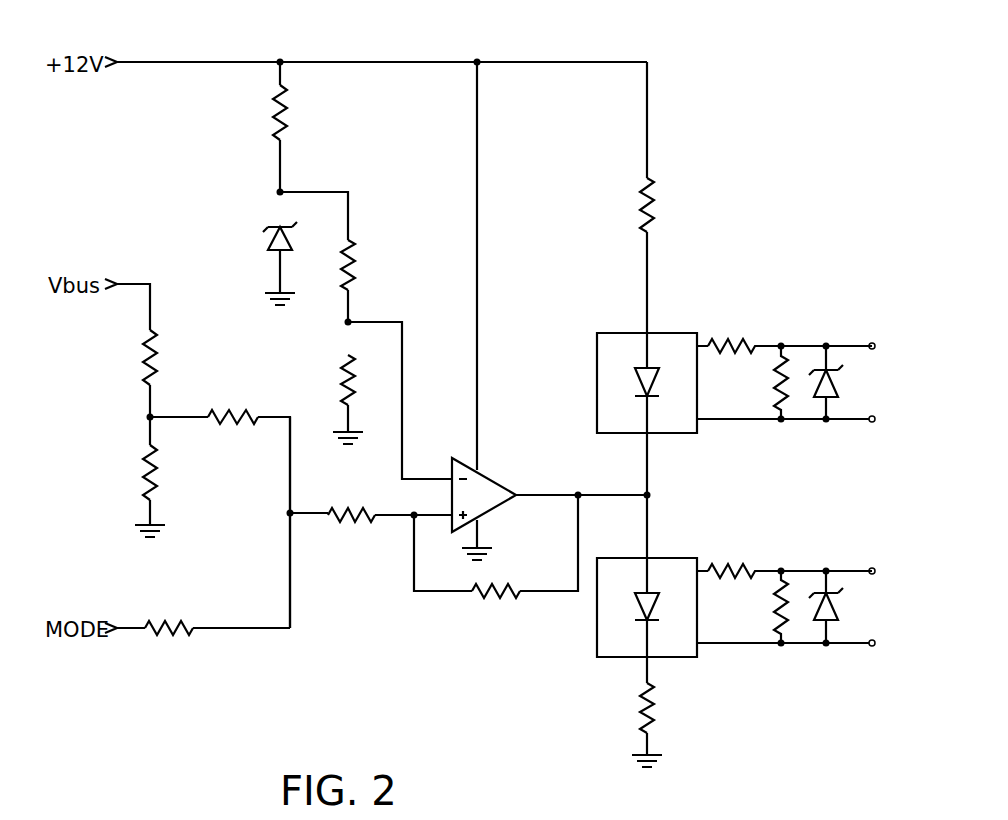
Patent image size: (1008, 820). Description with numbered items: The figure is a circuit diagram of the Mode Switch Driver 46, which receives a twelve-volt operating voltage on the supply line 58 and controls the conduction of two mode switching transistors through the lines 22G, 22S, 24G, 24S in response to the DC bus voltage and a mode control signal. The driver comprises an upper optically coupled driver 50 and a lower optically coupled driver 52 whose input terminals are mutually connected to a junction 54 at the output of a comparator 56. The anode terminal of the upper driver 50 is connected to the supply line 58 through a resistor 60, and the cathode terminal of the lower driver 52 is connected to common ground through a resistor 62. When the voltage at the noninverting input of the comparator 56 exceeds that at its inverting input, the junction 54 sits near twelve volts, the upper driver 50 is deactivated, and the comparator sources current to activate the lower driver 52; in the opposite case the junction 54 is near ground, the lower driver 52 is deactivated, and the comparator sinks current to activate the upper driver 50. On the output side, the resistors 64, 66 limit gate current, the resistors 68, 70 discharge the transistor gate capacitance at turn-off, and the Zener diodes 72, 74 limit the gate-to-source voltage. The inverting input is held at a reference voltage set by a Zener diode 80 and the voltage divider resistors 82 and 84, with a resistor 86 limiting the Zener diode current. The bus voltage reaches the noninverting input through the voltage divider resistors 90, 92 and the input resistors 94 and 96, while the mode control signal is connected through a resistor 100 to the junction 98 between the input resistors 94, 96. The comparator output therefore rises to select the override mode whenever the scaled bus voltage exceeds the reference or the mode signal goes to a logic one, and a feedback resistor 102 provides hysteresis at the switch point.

The +12 V line 58 is at (228, 62).
The resistor 86 is at (280, 118).
The Zener diode 80 is at (270, 240).
The voltage divider resistor 82 is at (352, 270).
The voltage divider resistor 84 is at (345, 375).
The voltage divider resistor 90 is at (150, 356).
The voltage divider resistor 92 is at (150, 478).
The input resistor 94 is at (232, 426).
The junction 98 is at (290, 513).
The input resistor 96 is at (347, 522).
The resistor 100 is at (178, 632).
The feedback resistor 102 is at (503, 598).
The comparator 56 is at (490, 480).
The junction 54 is at (647, 495).
The resistor 60 is at (647, 193).
The resistor 62 is at (647, 710).
The upper optically coupled driver 50 is at (630, 333).
The lower optically coupled driver 52 is at (597, 645).
The resistor 64 is at (722, 346).
The resistor 68 is at (775, 390).
The Zener diode 72 is at (820, 375).
The line 22G is at (858, 346).
The line 22S is at (845, 419).
The resistor 66 is at (745, 571).
The resistor 70 is at (781, 610).
The Zener diode 74 is at (826, 600).
The line 24G is at (850, 571).
The line 24S is at (848, 643).
The Mode Switch Driver 46 is at (730, 167).